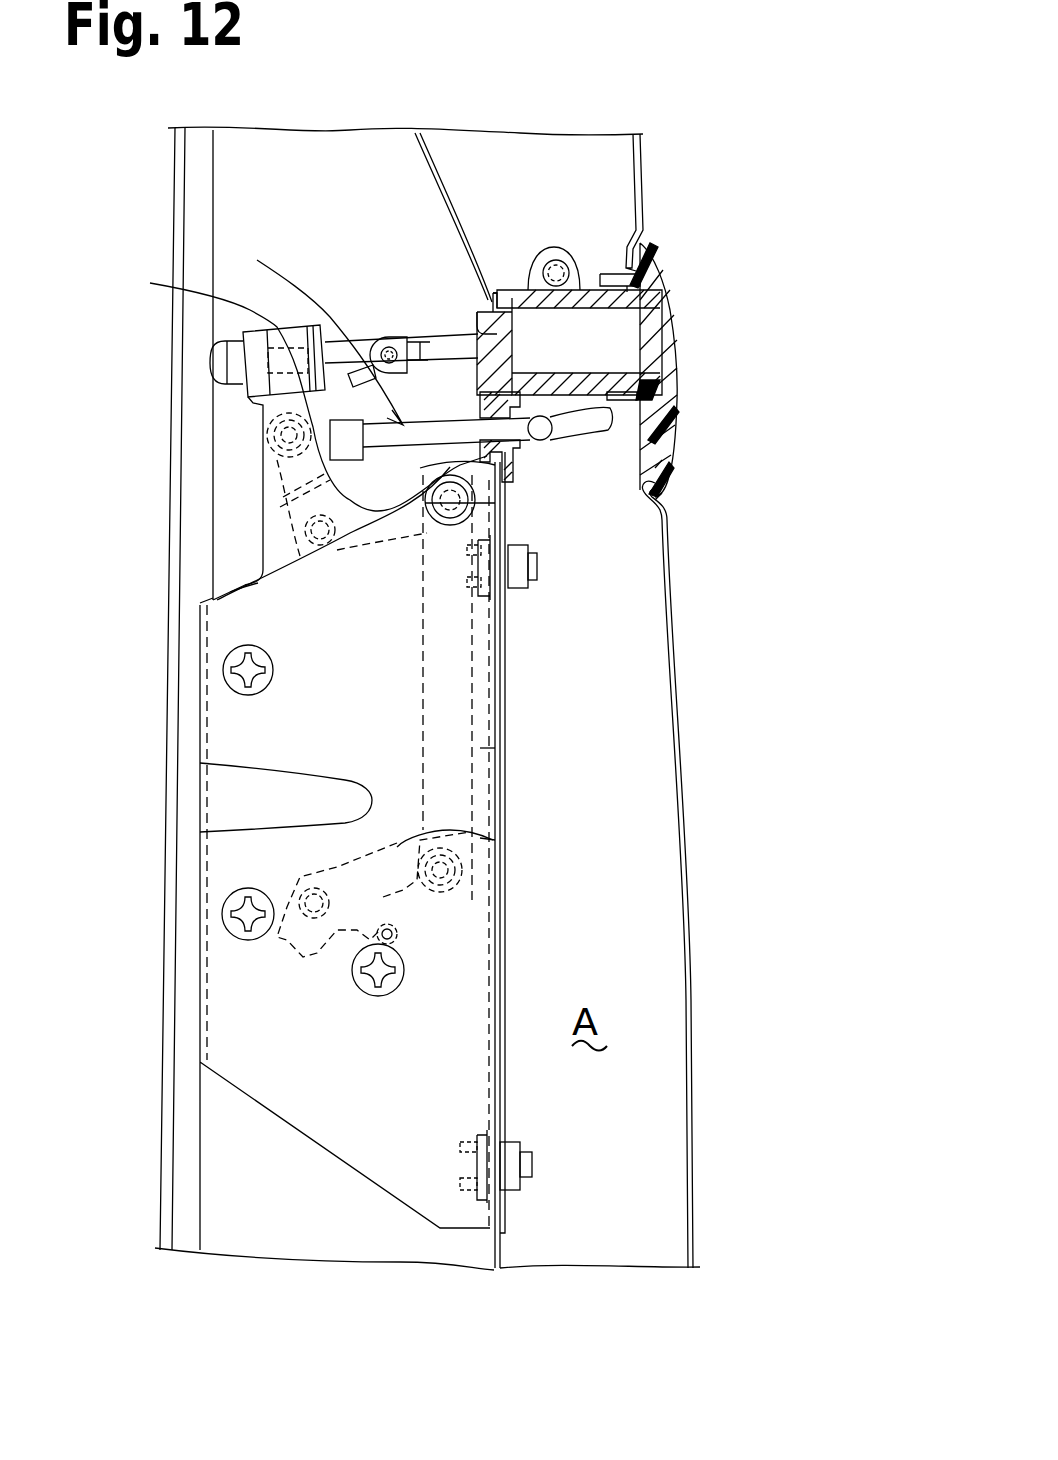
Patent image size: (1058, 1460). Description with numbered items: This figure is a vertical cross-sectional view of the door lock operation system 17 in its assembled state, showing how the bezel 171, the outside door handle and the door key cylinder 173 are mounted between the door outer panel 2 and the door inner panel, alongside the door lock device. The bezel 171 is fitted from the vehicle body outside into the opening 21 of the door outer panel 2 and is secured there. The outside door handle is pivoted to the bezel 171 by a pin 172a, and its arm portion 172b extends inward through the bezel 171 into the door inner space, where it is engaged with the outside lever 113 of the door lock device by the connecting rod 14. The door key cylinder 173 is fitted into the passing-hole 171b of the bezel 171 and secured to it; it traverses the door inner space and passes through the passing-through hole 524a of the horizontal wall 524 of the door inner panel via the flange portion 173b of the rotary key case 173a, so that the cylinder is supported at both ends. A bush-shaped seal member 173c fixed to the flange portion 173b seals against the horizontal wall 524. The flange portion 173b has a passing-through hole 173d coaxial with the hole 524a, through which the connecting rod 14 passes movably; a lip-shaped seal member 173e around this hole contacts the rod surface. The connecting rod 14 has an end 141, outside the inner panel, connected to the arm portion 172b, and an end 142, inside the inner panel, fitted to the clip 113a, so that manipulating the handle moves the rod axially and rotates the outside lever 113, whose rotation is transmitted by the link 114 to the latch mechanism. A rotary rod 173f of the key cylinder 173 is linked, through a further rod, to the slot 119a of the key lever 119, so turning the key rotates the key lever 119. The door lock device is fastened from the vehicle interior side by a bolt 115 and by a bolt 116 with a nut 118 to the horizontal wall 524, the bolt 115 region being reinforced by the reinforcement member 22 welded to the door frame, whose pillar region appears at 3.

The door outer panel 2 is at (692, 780).
The door frame rail 3 is at (164, 864).
The connecting rod 14 is at (257, 260).
The door lock operation system 17 is at (688, 283).
The opening 21 is at (582, 428).
The reinforcement member 22 is at (505, 822).
The outside lever 113 is at (330, 508).
The clip 113a is at (263, 405).
The link 114 is at (480, 748).
The bolt 115 is at (480, 838).
The bolt 116 is at (540, 568).
The nut 118 is at (522, 583).
The key lever 119 is at (243, 332).
The slot 119a is at (172, 294).
The end 141 is at (677, 410).
The end 142 is at (285, 438).
The bezel 171 is at (668, 431).
The passing-hole 171b is at (641, 298).
The pin 172a is at (565, 263).
The arm portion 172b is at (668, 462).
The door key cylinder 173 is at (678, 343).
The rotary key case 173a is at (511, 292).
The flange portion 173b is at (258, 583).
The seal member 173c is at (476, 293).
The passing-through hole 173d is at (600, 360).
The seal member 173e is at (523, 447).
The rotary rod 173f is at (417, 343).
The horizontal wall 524 is at (500, 920).
The passing-through hole 524a is at (410, 140).